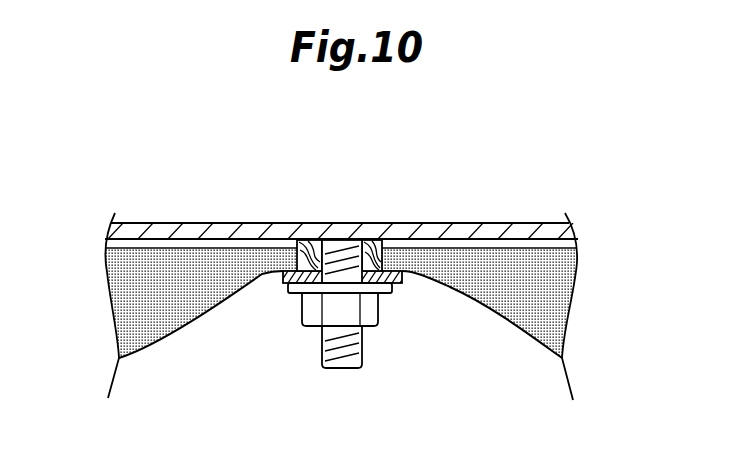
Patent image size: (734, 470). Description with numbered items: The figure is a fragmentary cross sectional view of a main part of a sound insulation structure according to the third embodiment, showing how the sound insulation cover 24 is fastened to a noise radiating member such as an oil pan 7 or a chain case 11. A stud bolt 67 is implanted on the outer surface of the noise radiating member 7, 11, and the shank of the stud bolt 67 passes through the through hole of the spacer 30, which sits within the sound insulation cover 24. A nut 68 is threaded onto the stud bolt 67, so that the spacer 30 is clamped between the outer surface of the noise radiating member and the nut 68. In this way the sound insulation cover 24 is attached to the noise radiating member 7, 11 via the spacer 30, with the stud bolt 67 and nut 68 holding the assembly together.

The oil pan 7 is at (341, 194).
The chain case 11 is at (472, 230).
The sound insulation cover 24 is at (167, 318).
The spacer 30 is at (277, 284).
The stud bolt 67 is at (347, 358).
The nut 68 is at (313, 318).